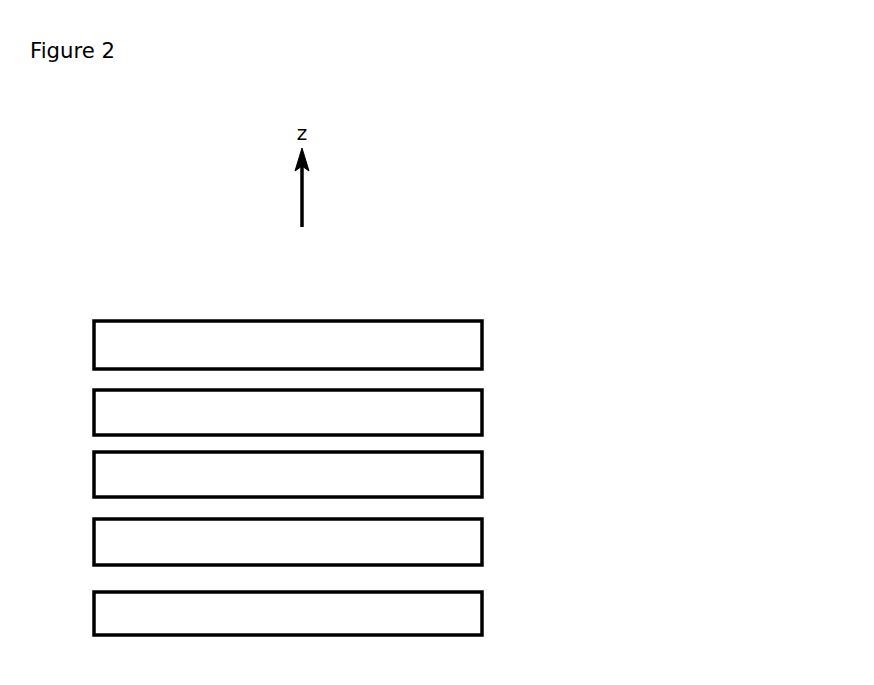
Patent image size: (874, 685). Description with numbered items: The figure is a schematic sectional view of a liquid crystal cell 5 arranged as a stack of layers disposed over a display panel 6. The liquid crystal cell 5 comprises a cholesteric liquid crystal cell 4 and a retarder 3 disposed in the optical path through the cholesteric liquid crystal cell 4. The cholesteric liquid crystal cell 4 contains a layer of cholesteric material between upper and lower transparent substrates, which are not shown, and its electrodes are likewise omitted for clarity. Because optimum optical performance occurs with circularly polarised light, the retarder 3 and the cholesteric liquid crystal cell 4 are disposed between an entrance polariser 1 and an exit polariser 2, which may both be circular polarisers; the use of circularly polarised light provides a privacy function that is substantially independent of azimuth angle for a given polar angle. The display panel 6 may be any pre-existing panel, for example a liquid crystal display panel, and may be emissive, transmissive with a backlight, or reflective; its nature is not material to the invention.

The entrance polariser 1 is at (484, 538).
The exit polariser 2 is at (484, 343).
The retarder 3 is at (484, 408).
The cholesteric liquid crystal cell 4 is at (484, 473).
The liquid crystal cell 5 is at (83, 320).
The display panel 6 is at (94, 612).